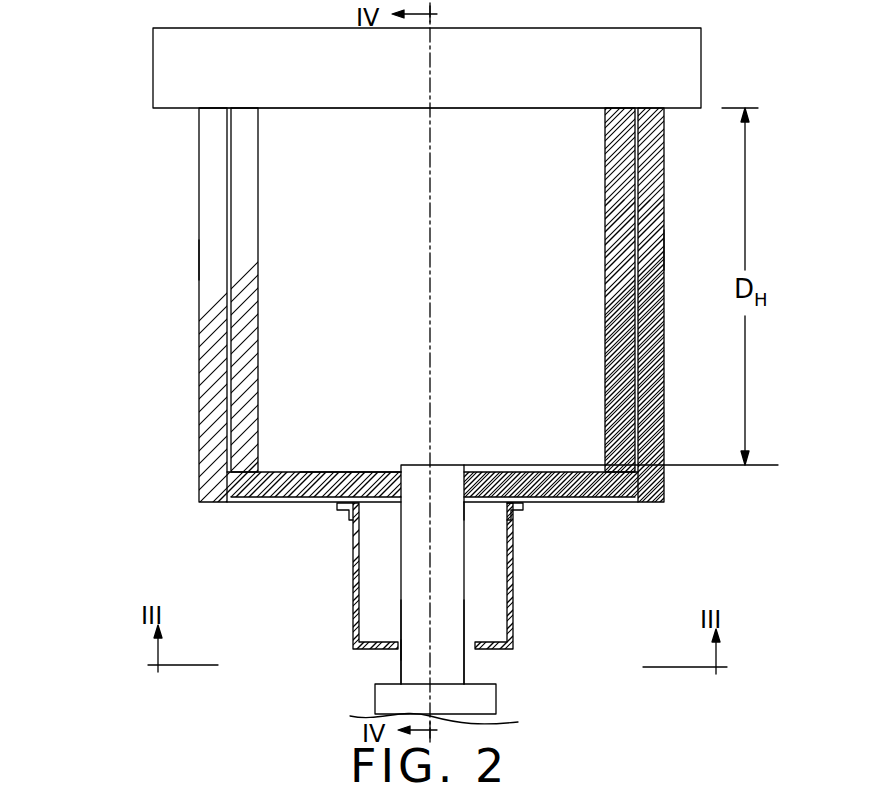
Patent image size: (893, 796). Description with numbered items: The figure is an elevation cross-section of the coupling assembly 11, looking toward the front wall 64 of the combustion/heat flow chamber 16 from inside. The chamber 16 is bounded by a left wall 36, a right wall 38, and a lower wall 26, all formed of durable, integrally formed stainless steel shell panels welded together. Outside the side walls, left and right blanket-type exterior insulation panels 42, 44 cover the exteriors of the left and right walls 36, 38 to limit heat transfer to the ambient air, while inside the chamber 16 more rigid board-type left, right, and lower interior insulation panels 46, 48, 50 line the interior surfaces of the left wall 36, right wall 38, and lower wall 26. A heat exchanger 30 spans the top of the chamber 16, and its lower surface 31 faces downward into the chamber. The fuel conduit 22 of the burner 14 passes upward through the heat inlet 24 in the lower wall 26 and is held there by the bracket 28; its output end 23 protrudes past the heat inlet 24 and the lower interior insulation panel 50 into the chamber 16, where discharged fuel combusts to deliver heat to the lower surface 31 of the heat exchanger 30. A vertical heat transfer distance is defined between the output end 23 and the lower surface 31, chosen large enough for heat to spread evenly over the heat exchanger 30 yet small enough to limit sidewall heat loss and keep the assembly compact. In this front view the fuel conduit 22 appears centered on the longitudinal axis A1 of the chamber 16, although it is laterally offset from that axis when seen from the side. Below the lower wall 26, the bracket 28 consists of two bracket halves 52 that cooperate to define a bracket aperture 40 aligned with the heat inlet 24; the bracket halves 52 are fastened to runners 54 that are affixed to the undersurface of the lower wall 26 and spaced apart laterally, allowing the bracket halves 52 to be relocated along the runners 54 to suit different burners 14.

The coupling assembly 11 is at (169, 399).
The burner 14 is at (378, 703).
The heat flow chamber 16 is at (522, 135).
The fuel conduit 22 is at (455, 661).
The output end 23 is at (447, 465).
The heat inlet 24 is at (466, 505).
The lower wall 26 is at (262, 503).
The bracket 28 is at (445, 576).
The heat exchanger 30 is at (683, 67).
The lower surface 31 is at (326, 109).
The left wall 36 is at (198, 174).
The right wall 38 is at (664, 190).
The bracket aperture 40 is at (400, 651).
The left exterior insulation panel 42 is at (199, 262).
The right exterior insulation panel 44 is at (664, 250).
The left interior insulation panel 46 is at (259, 190).
The right interior insulation panel 48 is at (605, 200).
The lower interior insulation panel 50 is at (356, 471).
The bracket halves 52 is at (353, 580).
The runners 54 is at (344, 505).
The front wall 64 is at (522, 309).
The longitudinal axis A1 is at (431, 163).